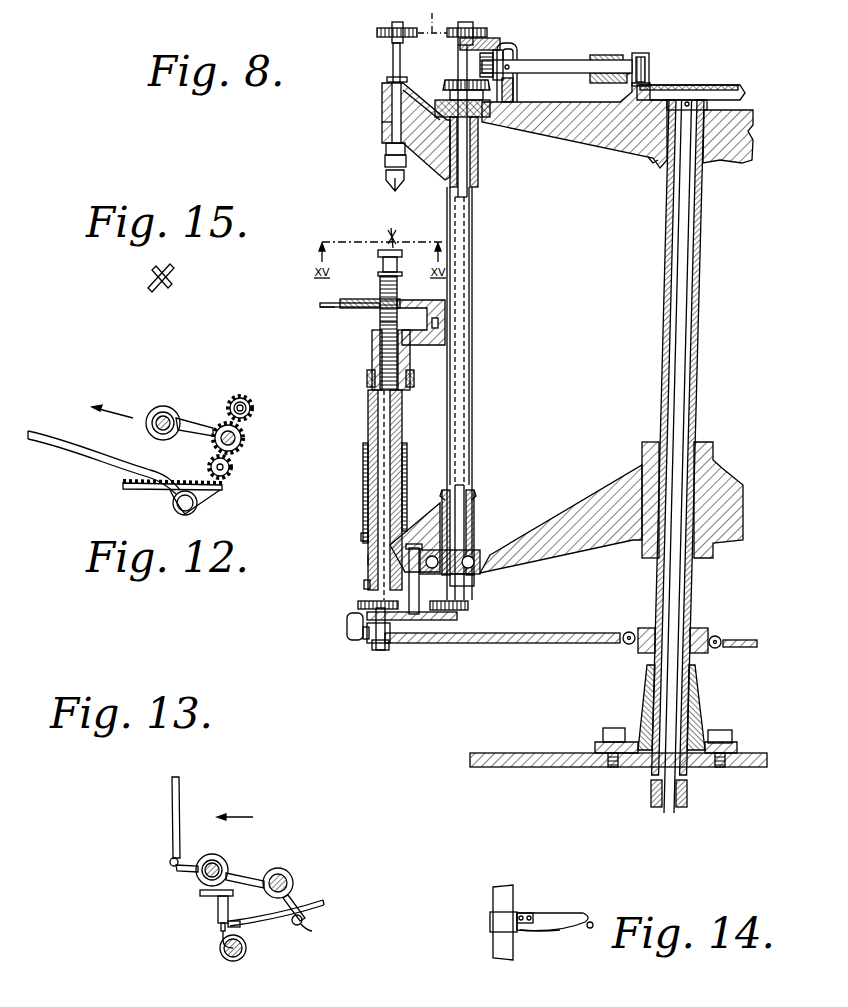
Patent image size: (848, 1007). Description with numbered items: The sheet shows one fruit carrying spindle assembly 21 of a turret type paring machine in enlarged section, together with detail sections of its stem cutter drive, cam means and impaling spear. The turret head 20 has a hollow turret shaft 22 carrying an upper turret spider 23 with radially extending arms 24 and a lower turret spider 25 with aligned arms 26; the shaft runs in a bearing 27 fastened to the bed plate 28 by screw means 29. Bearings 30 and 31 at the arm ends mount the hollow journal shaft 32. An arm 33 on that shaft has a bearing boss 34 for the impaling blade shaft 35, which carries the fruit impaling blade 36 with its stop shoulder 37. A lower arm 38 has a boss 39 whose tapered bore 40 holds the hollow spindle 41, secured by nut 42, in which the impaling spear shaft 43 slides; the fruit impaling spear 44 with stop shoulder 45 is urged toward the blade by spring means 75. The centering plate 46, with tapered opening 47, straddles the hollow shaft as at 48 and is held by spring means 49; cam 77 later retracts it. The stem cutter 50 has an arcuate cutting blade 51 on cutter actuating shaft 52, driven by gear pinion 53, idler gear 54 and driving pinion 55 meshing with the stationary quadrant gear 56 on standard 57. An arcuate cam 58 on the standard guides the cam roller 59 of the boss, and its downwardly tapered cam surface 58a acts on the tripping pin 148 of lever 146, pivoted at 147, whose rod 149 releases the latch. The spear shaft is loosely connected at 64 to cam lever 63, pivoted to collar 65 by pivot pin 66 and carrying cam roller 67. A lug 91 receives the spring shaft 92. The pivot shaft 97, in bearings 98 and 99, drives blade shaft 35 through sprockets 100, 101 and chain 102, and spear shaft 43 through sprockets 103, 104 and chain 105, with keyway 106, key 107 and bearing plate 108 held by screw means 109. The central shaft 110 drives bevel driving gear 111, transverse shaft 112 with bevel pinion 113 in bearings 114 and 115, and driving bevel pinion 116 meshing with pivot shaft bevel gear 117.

In FIG. 8, the turret head 20 is at (705, 72).
In FIG. 8, the fruit carrying spindle assembly 21 is at (382, 107).
In FIG. 8, the hollow turret shaft 22 is at (703, 235).
In FIG. 8, the upper turret spider 23 is at (655, 165).
In FIG. 8, the radially extending arm 24 is at (597, 142).
In FIG. 8, the lower turret spider 25 is at (710, 440).
In FIG. 8, the radially extending arm 26 is at (580, 500).
In FIG. 8, the bearing 27 is at (646, 690).
In FIG. 8, the bed plate 28 is at (525, 753).
In FIG. 8, the screw means 29 is at (612, 730).
In FIG. 8, the bearing 30 is at (492, 117).
In FIG. 8, the bearing 31 is at (515, 560).
In FIG. 8, the hollow journal shaft 32 is at (472, 380).
In FIG. 12, the hollow journal shaft 32 is at (160, 433).
In FIG. 13, the hollow journal shaft 32 is at (208, 855).
In FIG. 8, the arm 33 is at (433, 152).
In FIG. 8, the bearing boss 34 is at (382, 122).
In FIG. 8, the impaling blade shaft 35 is at (393, 55).
In FIG. 8, the fruit impaling blade 36 is at (385, 185).
In FIG. 8, the stop shoulder 37 is at (386, 165).
In FIG. 8, the arm 38 is at (474, 525).
In FIG. 8, the boss 39 is at (361, 538).
In FIG. 13, the boss 39 is at (293, 885).
In FIG. 8, the tapered bore 40 is at (368, 560).
In FIG. 8, the hollow spindle 41 is at (368, 420).
In FIG. 13, the hollow spindle 41 is at (290, 875).
In FIG. 8, the nut 42 is at (365, 585).
In FIG. 8, the impaling spear shaft 43 is at (388, 432).
In FIG. 13, the impaling spear shaft 43 is at (265, 886).
In FIG. 8, the fruit impaling spear 44 is at (390, 232).
In FIG. 15, the fruit impaling spear 44 is at (158, 285).
In FIG. 8, the stop shoulder 45 is at (380, 253).
In FIG. 8, the centering plate 46 is at (355, 299).
In FIG. 8, the tapered opening 47 is at (380, 297).
In FIG. 8, the straddling rear portion 48 is at (446, 320).
In FIG. 8, the spring means 49 is at (365, 462).
In FIG. 8, the stem cutter 50 is at (320, 305).
In FIG. 8, the arcuate cutting blade 51 is at (322, 309).
In FIG. 12, the cutter actuating shaft 52 is at (239, 394).
In FIG. 12, the gear pinion 53 is at (254, 409).
In FIG. 8, the idler gear 54 is at (372, 375).
In FIG. 12, the idler gear 54 is at (245, 441).
In FIG. 12, the driving pinion 55 is at (232, 472).
In FIG. 12, the stationary quadrant gear 56 is at (218, 488).
In FIG. 12, the standard 57 is at (183, 506).
In FIG. 13, the standard 57 is at (233, 961).
In FIG. 14, the standard 57 is at (495, 940).
In FIG. 13, the arcuate cam 58 is at (270, 917).
In FIG. 14, the arcuate cam 58 is at (555, 912).
In FIG. 14, the downwardly tapered cam surface 58a is at (543, 934).
In FIG. 13, the cam roller 59 is at (303, 924).
In FIG. 8, the cam lever 63 is at (480, 643).
In FIG. 8, the loose connection 64 is at (390, 636).
In FIG. 8, the collar 65 is at (705, 630).
In FIG. 8, the pivot pin 66 is at (631, 632).
In FIG. 8, the cam roller 67 is at (350, 638).
In FIG. 8, the spring means 75 is at (380, 322).
In FIG. 12, the cam 77 is at (62, 456).
In FIG. 13, the lug 91 is at (182, 871).
In FIG. 13, the spring shaft 92 is at (172, 800).
In FIG. 8, the pivot shaft 97 is at (467, 185).
In FIG. 12, the pivot shaft 97 is at (166, 416).
In FIG. 13, the pivot shaft 97 is at (215, 864).
In FIG. 8, the bearing 98 is at (487, 38).
In FIG. 8, the bearing 99 is at (474, 578).
In FIG. 8, the sprocket 100 is at (380, 32).
In FIG. 8, the sprocket 101 is at (455, 38).
In FIG. 8, the chain 102 is at (433, 18).
In FIG. 8, the sprocket 103 is at (358, 606).
In FIG. 8, the sprocket 104 is at (468, 607).
In FIG. 8, the chain 105 is at (415, 604).
In FIG. 8, the keyway 106 is at (383, 470).
In FIG. 8, the key 107 is at (368, 600).
In FIG. 8, the bearing plate 108 is at (433, 620).
In FIG. 8, the screw means 109 is at (405, 548).
In FIG. 8, the central shaft 110 is at (681, 312).
In FIG. 8, the bevel driving gear 111 is at (725, 85).
In FIG. 8, the transverse shaft 112 is at (540, 70).
In FIG. 8, the bevel pinion 113 is at (645, 60).
In FIG. 8, the bearing 114 is at (518, 50).
In FIG. 8, the bearing 115 is at (600, 56).
In FIG. 8, the driving bevel pinion 116 is at (480, 62).
In FIG. 8, the pivot shaft bevel gear 117 is at (450, 83).
In FIG. 13, the lever 146 is at (203, 893).
In FIG. 13, the pivot 147 is at (220, 905).
In FIG. 13, the tripping pin 148 is at (221, 926).
In FIG. 14, the tripping pin 148 is at (592, 922).
In FIG. 13, the rod 149 is at (235, 878).